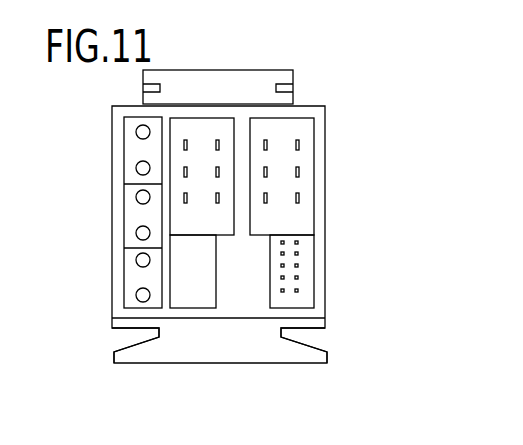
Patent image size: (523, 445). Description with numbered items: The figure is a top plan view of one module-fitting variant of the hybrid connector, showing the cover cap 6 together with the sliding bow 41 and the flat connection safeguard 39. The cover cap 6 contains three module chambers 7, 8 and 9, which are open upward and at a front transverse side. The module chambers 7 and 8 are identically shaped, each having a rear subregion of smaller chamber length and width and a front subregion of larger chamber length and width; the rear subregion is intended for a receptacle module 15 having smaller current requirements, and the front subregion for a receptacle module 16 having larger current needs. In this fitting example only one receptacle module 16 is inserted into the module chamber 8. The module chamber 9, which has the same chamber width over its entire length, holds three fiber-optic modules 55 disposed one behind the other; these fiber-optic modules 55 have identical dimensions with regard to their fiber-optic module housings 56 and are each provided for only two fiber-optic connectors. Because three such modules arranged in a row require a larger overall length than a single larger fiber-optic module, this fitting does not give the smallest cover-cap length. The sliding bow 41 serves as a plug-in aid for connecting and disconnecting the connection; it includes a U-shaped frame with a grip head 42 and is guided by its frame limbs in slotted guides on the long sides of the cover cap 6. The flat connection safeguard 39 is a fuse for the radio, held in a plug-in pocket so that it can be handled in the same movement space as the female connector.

The cover cap 6 is at (332, 212).
The module chamber 7 is at (270, 285).
The module chamber 8 is at (170, 260).
The module chamber 9 is at (125, 278).
The receptacle module 15 is at (304, 272).
The receptacle module 16 is at (198, 131).
The flat connection safeguard 39 is at (291, 73).
The sliding bow 41 is at (330, 338).
The grip head 42 is at (130, 352).
The fiber-optic module 55 is at (114, 140).
The fiber-optic module housing 56 is at (124, 158).